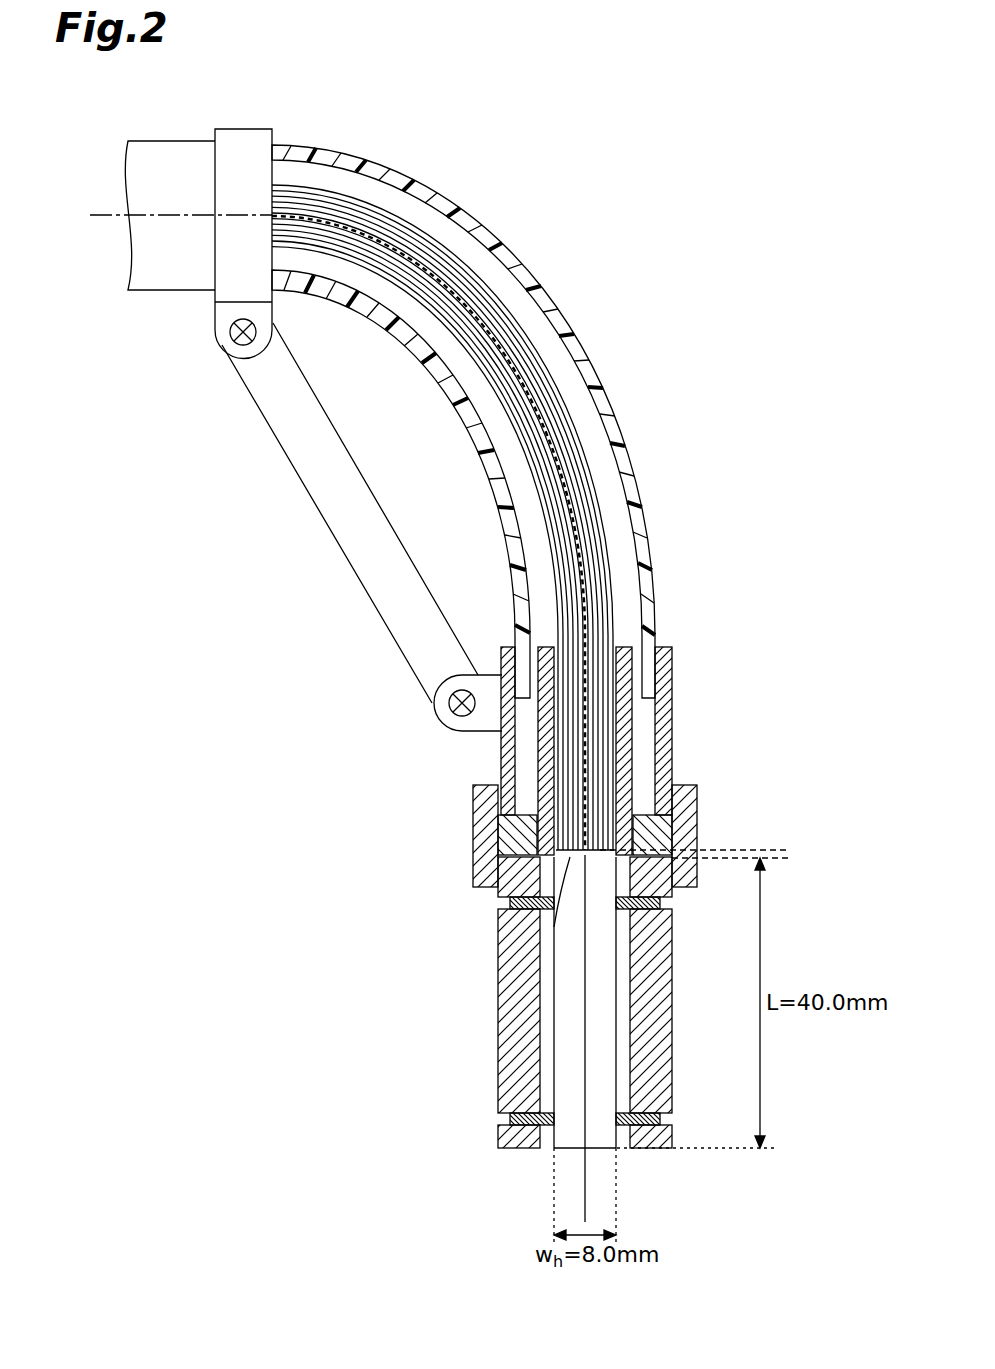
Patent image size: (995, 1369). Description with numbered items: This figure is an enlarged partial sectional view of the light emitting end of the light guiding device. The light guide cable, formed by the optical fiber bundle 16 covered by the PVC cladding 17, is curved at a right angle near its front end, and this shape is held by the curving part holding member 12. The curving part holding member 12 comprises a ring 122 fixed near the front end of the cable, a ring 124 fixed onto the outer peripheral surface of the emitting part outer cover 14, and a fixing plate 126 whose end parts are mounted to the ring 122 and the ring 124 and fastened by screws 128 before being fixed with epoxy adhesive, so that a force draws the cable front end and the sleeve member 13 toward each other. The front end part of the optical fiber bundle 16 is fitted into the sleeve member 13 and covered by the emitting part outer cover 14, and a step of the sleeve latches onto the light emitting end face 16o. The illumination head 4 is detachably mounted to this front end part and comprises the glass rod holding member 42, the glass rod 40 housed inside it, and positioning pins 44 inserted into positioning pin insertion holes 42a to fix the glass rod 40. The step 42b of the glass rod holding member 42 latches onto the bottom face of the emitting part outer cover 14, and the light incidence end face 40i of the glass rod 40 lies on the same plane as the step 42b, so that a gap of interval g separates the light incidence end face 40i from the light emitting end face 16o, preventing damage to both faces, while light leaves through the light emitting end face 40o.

The curving part holding member 12 is at (335, 548).
The ring 122 is at (243, 136).
The screws 128 is at (229, 333).
The fixing plate 126 is at (288, 450).
The ring 124 is at (441, 712).
The PVC cladding 17 is at (628, 500).
The optical fiber bundle 16 is at (593, 578).
The light emitting end face 16o is at (603, 850).
The sleeve member 13 is at (633, 717).
The emitting part outer cover 14 is at (663, 735).
The illumination head 4 is at (472, 829).
The step 42b is at (497, 870).
The positioning pin insertion holes 42a is at (500, 897).
The positioning pin 44 is at (505, 903).
The glass rod holding member 42 is at (660, 1000).
The glass rod 40 is at (600, 1130).
The light incidence end face 40i is at (553, 925).
The light emitting end face 40o is at (567, 1152).
The gap interval g is at (778, 824).